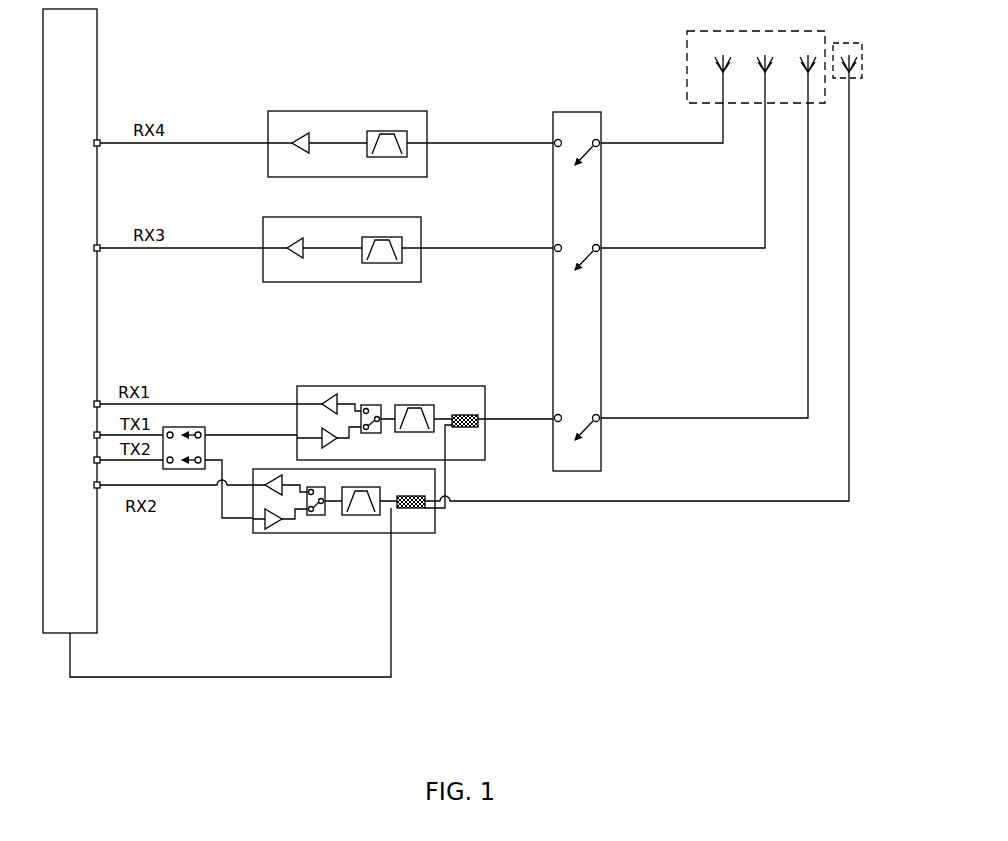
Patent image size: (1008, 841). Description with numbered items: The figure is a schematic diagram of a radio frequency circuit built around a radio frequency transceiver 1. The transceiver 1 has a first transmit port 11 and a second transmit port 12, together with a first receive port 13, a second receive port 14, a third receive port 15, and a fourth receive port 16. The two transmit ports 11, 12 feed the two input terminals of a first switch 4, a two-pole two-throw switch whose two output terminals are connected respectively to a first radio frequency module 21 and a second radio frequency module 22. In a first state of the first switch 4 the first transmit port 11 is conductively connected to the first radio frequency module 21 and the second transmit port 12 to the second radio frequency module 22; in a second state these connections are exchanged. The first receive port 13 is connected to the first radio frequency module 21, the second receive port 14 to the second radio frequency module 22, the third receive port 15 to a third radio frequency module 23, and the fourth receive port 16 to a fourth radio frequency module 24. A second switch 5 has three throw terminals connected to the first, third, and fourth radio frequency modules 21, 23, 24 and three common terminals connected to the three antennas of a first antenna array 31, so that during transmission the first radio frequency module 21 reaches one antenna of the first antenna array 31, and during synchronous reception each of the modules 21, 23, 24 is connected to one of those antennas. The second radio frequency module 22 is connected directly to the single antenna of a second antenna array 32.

The radio frequency transceiver 1 is at (97, 60).
The first switch 4 is at (205, 447).
The second switch 5 is at (553, 112).
The first transmit port 11 is at (97, 435).
The second transmit port 12 is at (97, 460).
The first receive port 13 is at (100, 402).
The second receive port 14 is at (97, 485).
The third receive port 15 is at (100, 246).
The fourth receive port 16 is at (100, 141).
The first radio frequency module 21 is at (395, 386).
The second radio frequency module 22 is at (306, 533).
The third radio frequency module 23 is at (390, 217).
The fourth radio frequency module 24 is at (348, 111).
The first antenna array 31 is at (687, 72).
The second antenna array 32 is at (862, 64).